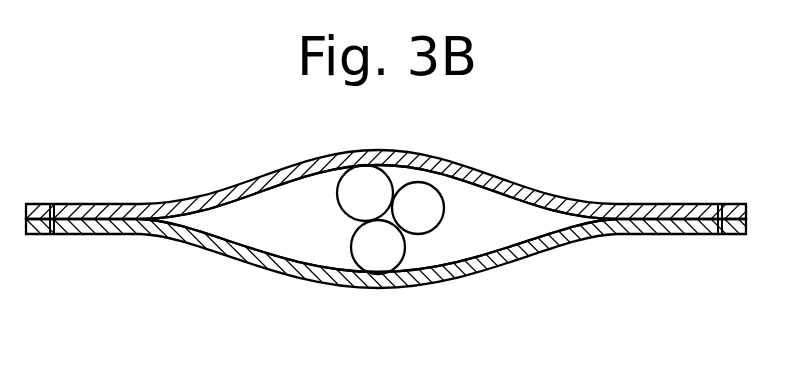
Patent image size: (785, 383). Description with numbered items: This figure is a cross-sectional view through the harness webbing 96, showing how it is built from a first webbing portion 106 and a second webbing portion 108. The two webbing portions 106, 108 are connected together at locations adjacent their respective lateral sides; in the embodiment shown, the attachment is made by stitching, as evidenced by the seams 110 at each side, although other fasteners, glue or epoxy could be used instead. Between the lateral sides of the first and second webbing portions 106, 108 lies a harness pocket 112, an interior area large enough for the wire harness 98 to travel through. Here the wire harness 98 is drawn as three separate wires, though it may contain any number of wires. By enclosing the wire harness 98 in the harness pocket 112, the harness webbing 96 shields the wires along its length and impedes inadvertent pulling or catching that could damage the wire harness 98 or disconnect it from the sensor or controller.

The harness webbing 96 is at (392, 227).
The wire harness 98 is at (330, 230).
The first webbing portion 106 is at (115, 204).
The second webbing portion 108 is at (378, 289).
The seams 110 is at (52, 236).
The harness pocket 112 is at (487, 218).